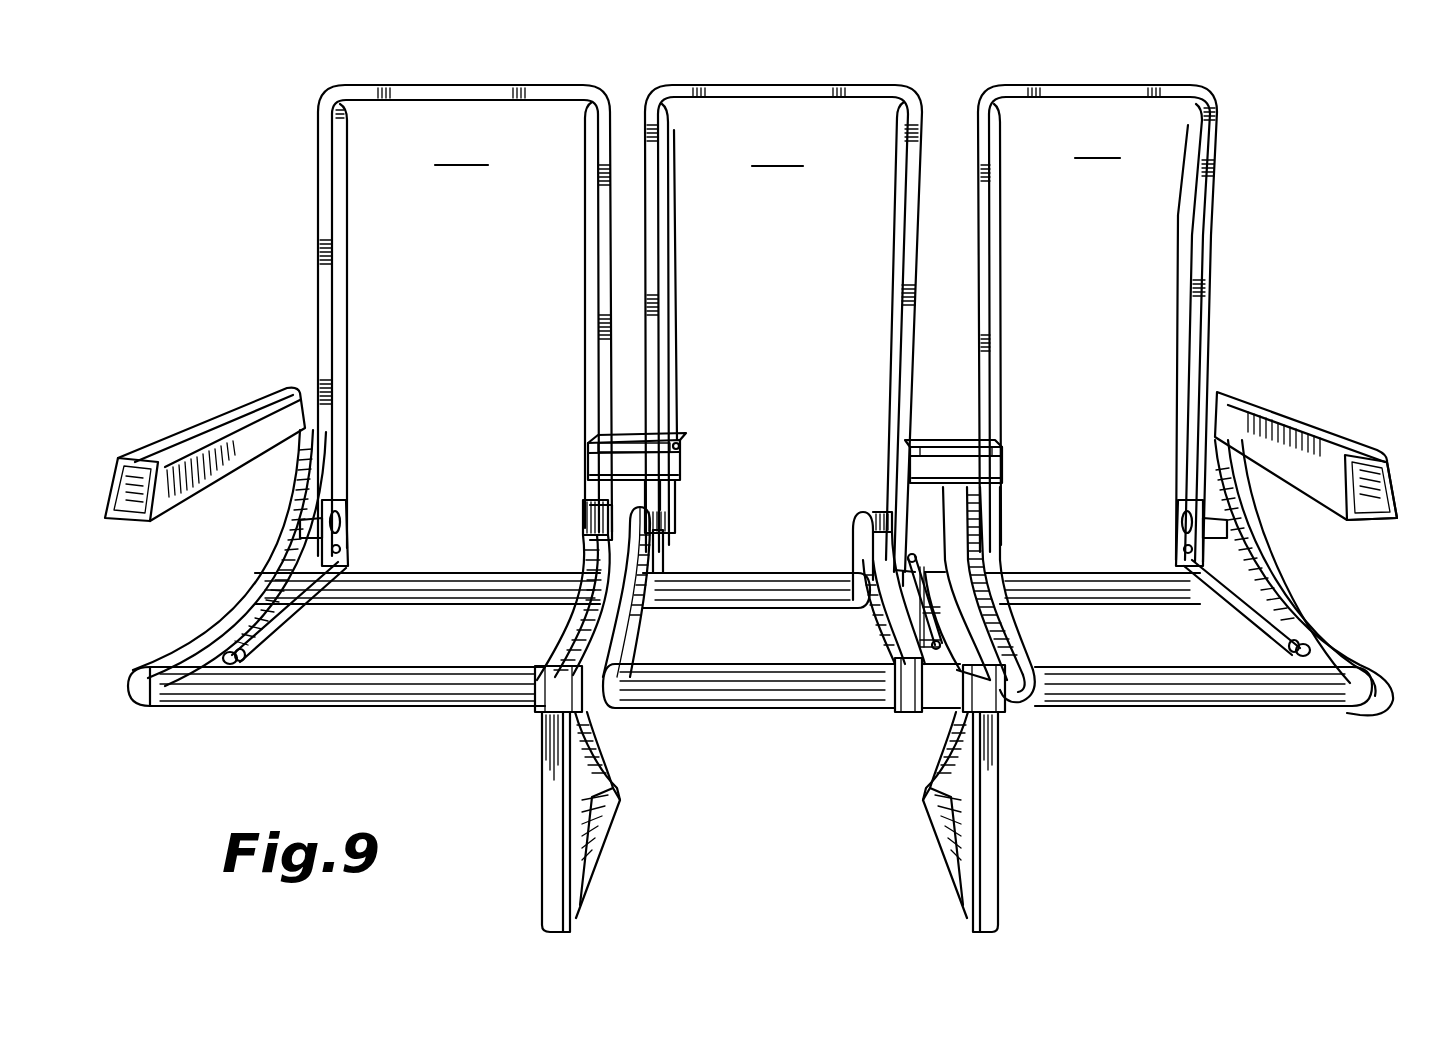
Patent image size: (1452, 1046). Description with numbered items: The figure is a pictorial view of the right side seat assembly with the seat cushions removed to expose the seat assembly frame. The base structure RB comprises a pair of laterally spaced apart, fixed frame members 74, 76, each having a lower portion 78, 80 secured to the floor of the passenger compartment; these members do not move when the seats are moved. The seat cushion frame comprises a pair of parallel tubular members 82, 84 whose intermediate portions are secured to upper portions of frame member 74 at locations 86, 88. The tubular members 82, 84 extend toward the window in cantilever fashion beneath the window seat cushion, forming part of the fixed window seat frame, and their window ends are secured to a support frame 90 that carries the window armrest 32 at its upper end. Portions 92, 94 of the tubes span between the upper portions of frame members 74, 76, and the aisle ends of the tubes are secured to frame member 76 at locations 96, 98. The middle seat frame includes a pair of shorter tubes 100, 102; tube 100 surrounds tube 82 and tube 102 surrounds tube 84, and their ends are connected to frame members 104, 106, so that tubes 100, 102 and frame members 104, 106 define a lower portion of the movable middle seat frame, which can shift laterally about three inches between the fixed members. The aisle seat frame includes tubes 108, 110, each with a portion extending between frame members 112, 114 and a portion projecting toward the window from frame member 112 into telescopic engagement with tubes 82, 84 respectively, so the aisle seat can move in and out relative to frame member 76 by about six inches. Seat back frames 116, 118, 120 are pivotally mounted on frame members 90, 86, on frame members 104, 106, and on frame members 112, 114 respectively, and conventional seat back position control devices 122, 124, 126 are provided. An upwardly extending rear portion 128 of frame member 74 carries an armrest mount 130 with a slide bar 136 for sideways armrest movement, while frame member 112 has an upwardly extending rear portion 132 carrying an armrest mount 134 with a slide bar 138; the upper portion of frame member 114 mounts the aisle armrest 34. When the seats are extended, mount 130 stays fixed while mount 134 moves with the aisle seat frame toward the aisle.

The window armrest 32 is at (215, 425).
The right armrest 34 is at (1318, 432).
The frame member 74 is at (550, 815).
The frame member 76 is at (990, 805).
The lower portion 78 is at (600, 830).
The lower portion 80 is at (945, 825).
The tubular member 82 is at (455, 588).
The tubular member 84 is at (385, 700).
The securing location 86 is at (602, 575).
The securing location 88 is at (538, 700).
The support frame 90 is at (255, 608).
The tube portion 92 is at (890, 572).
The tube portion 94 is at (890, 698).
The securing location 96 is at (955, 587).
The securing location 98 is at (1003, 700).
The tube 100 is at (725, 598).
The tube 102 is at (740, 695).
The frame member 104 is at (660, 563).
The frame member 106 is at (858, 542).
The tube 108 is at (1118, 590).
The tube 110 is at (1200, 700).
The frame member 112 is at (1015, 645).
The frame member 114 is at (1335, 640).
The seat back frame 116 is at (345, 330).
The seat back frame 118 is at (662, 228).
The seat back frame 120 is at (993, 247).
The seat back position control device 122 is at (275, 628).
The seat back position control device 124 is at (910, 610).
The seat back position control device 126 is at (1275, 630).
The pivot collar 128 is at (596, 497).
The armrest mount 130 is at (600, 460).
The upwardly extending rear portion 132 is at (975, 510).
The armrest mount 134 is at (975, 470).
The slide bar 136 is at (640, 447).
The slide bar 138 is at (955, 447).
The base structure RB is at (620, 880).